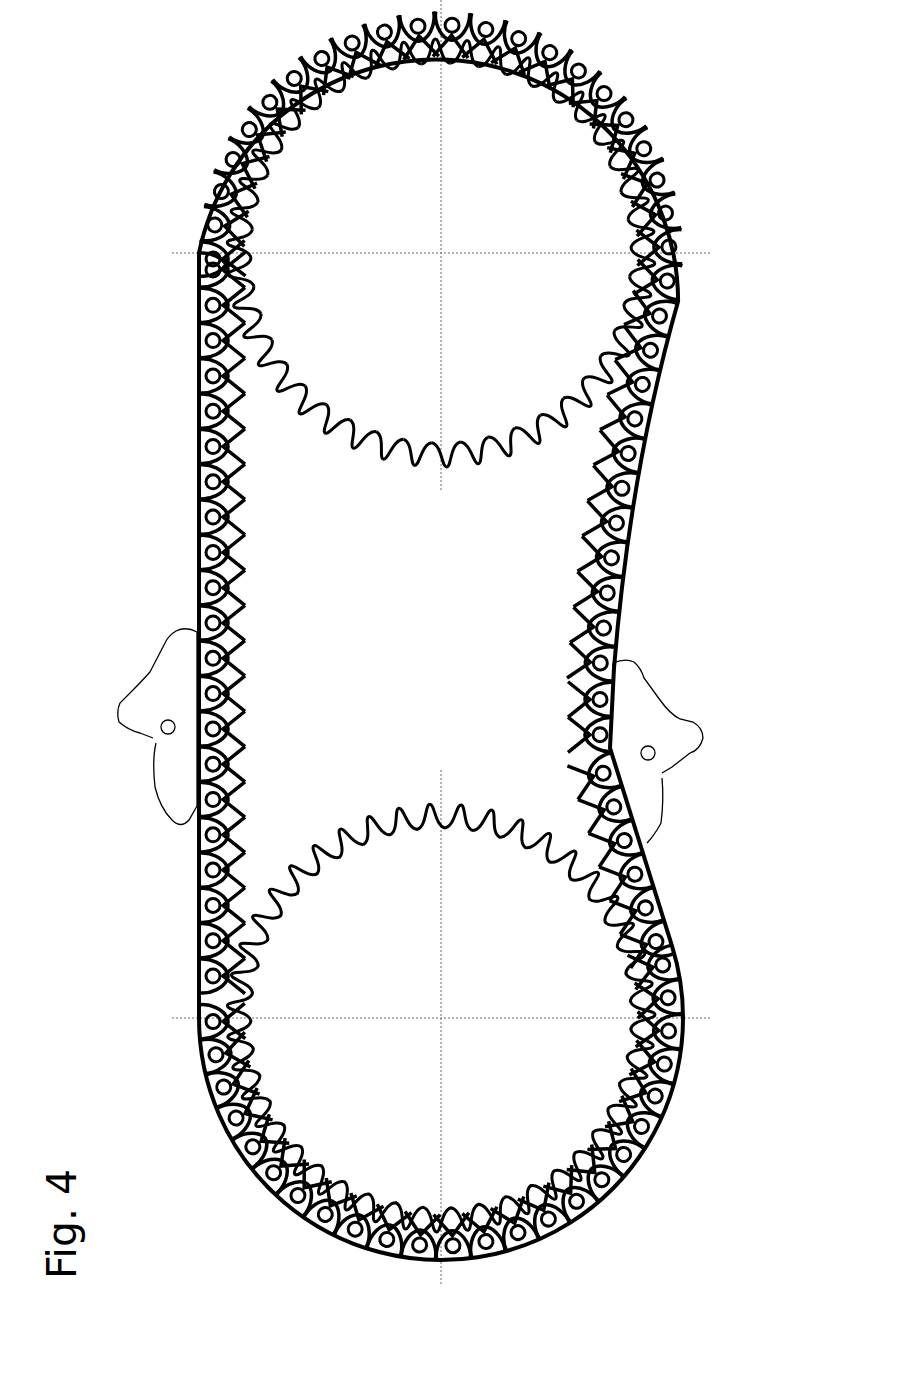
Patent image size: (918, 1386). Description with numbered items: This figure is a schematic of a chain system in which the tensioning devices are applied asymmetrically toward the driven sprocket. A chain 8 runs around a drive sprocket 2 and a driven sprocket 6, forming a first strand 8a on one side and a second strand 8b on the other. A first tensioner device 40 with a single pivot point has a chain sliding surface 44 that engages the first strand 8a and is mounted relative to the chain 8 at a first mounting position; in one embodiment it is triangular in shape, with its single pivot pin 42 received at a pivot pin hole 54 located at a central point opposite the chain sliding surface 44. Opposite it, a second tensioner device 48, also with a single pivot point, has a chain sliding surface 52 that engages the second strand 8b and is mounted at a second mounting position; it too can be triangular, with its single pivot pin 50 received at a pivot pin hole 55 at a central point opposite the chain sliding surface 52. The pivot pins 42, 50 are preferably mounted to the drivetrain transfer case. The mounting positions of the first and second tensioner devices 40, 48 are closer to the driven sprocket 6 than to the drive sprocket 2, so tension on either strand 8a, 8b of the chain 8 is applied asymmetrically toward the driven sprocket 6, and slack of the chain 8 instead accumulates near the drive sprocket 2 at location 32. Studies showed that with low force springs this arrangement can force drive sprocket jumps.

The drive sprocket 2 is at (500, 232).
The driven sprocket 6 is at (456, 1030).
The location 32 is at (483, 632).
The chain 8 is at (265, 795).
The first strand 8a is at (208, 622).
The second strand 8b is at (635, 458).
The first tensioner device 40 is at (118, 674).
The chain sliding surface 44 is at (198, 682).
The pivot pin hole 54 is at (162, 722).
The pivot pin 42 is at (165, 732).
The second tensioner device 48 is at (707, 694).
The chain sliding surface 52 is at (620, 730).
The pivot pin hole 55 is at (658, 753).
The pivot pin 50 is at (652, 757).